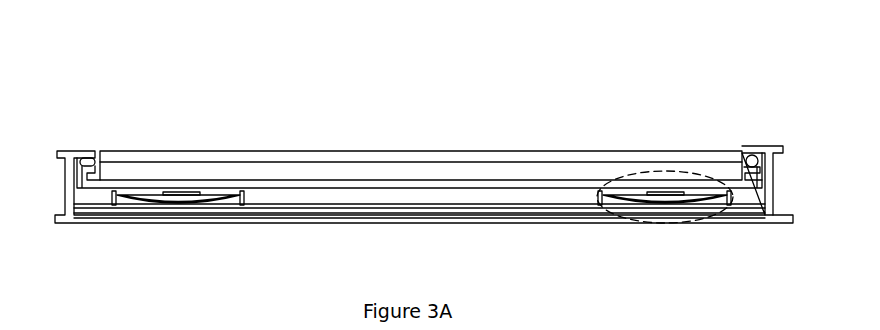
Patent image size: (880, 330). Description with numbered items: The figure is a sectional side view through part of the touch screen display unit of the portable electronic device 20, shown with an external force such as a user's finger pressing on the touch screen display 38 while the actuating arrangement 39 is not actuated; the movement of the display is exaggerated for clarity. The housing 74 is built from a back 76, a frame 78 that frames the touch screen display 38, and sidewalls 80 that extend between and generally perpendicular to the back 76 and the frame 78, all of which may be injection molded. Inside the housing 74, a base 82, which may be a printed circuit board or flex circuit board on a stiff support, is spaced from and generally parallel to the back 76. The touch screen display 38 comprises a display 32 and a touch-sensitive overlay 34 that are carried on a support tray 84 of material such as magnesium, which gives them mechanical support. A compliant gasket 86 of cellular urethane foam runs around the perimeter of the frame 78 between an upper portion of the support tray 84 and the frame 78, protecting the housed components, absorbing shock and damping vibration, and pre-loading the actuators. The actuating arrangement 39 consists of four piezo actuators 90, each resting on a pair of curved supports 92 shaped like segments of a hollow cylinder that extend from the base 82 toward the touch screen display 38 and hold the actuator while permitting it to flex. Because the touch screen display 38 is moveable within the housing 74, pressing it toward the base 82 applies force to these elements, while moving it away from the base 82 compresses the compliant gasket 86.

The portable electronic device 20 is at (594, 78).
The touch screen display 38 is at (177, 141).
The display 32 is at (333, 163).
The touch-sensitive overlay 34 is at (398, 152).
The housing 74 is at (78, 232).
The sidewalls 80 is at (770, 205).
The back 76 is at (478, 220).
The base 82 is at (273, 207).
The frame 78 is at (89, 149).
The compliant gasket 86 is at (752, 154).
The support tray 84 is at (764, 173).
The piezo actuator 90 is at (130, 200).
The curved supports 92 is at (118, 200).
The actuating arrangement 39 is at (697, 222).